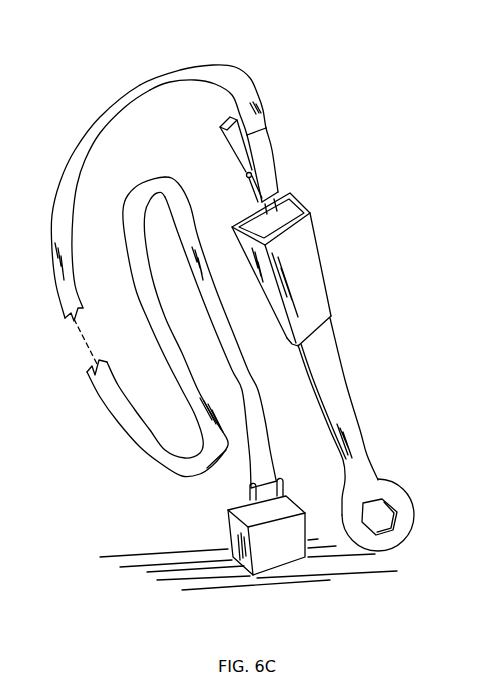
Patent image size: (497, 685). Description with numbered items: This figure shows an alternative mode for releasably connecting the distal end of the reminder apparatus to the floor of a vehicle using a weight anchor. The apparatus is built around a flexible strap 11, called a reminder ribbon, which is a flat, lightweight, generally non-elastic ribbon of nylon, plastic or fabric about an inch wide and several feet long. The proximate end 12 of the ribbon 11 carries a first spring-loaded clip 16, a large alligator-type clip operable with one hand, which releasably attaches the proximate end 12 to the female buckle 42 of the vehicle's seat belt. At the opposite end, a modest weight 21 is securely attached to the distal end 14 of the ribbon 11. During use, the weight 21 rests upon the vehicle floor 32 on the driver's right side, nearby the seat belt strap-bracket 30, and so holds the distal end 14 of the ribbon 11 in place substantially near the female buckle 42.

The flexible strap 11 is at (58, 173).
The proximate end 12 is at (188, 67).
The distal end 14 is at (245, 458).
The first spring-loaded clip 16 is at (272, 150).
The weight 21 is at (233, 530).
The seat belt strap-bracket 30 is at (367, 475).
The vehicle floor 32 is at (158, 577).
The female buckle 42 is at (307, 263).